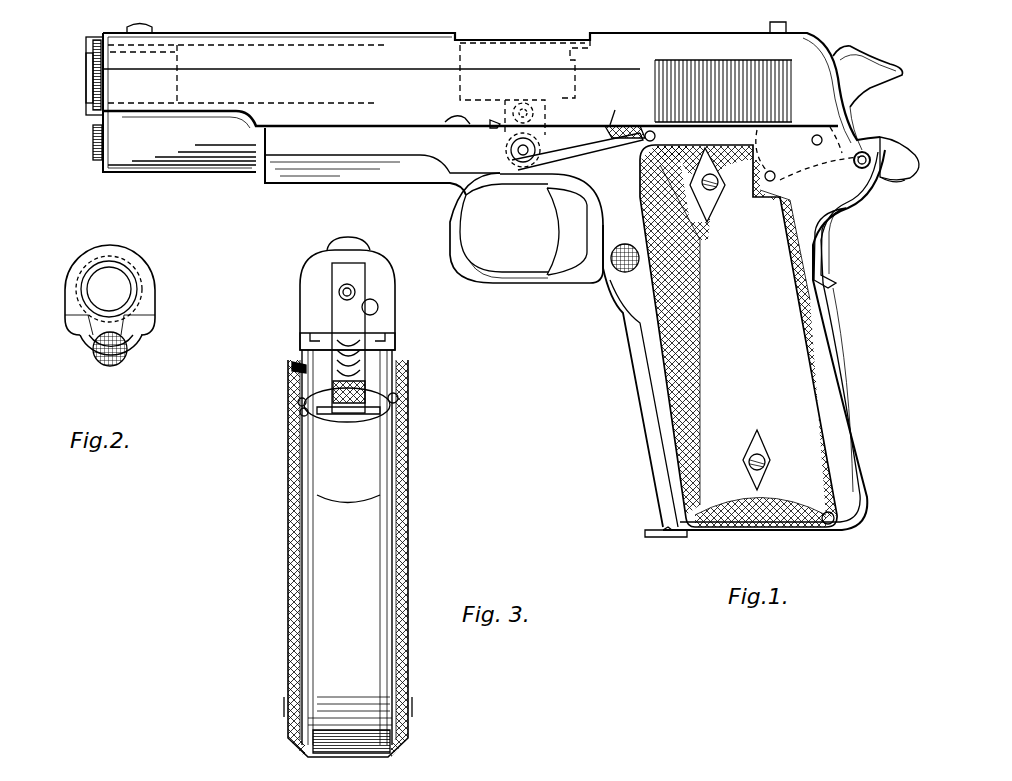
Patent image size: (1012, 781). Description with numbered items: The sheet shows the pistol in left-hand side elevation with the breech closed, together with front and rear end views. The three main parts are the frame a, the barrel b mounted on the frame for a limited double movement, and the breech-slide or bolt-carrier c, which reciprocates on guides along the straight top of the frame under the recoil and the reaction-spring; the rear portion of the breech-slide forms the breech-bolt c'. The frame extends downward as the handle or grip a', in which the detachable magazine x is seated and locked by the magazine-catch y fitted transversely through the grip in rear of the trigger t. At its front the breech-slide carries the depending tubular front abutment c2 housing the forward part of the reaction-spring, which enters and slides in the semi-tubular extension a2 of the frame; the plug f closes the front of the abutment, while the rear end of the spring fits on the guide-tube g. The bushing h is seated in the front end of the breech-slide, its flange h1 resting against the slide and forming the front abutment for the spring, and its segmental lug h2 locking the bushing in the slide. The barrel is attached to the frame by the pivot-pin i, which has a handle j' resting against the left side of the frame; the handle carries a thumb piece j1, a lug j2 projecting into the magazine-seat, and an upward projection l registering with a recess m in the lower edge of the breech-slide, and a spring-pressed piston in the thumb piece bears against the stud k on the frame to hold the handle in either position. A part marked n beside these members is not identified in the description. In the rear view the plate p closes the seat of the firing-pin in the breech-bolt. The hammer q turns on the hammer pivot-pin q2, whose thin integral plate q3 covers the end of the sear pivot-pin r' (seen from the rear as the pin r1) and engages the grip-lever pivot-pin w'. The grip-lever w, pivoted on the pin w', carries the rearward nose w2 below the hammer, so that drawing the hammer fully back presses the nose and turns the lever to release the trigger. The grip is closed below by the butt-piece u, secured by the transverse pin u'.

In FIG. 1, the frame a is at (575, 329).
In FIG. 1, the handle or grip a' is at (738, 336).
In FIG. 1, the semi-tubular extension of the frame a2 is at (313, 140).
In FIG. 1, the barrel b is at (505, 38).
In FIG. 2, the barrel b is at (109, 289).
In FIG. 1, the breech-slide or bolt-carrier c is at (491, 89).
In FIG. 2, the breech-slide or bolt-carrier c is at (117, 295).
In FIG. 1, the breech-bolt c' is at (603, 70).
In FIG. 3, the breech-bolt c' is at (347, 293).
In FIG. 1, the front abutment c2 is at (182, 144).
In FIG. 2, the front abutment c2 is at (122, 362).
In FIG. 1, the plug f is at (95, 158).
In FIG. 2, the plug f is at (96, 362).
In FIG. 3, the guide-tube g is at (348, 337).
In FIG. 1, the bushing h is at (90, 75).
In FIG. 2, the flange of the bushing h1 is at (126, 310).
In FIG. 2, the segmental lug of the bushing h2 is at (90, 308).
In FIG. 1, the pivot-pin i is at (508, 150).
In FIG. 1, the handle of the pivot-pin j' is at (577, 151).
In FIG. 1, the thumb piece j1 is at (630, 140).
In FIG. 3, the thumb piece j1 is at (292, 368).
In FIG. 1, the lug of the handle j2 is at (605, 150).
In FIG. 1, the stud k is at (655, 136).
In FIG. 3, the stud k is at (299, 400).
In FIG. 1, the upward projection of the handle l is at (611, 108).
In FIG. 1, the recess in the breech-slide m is at (445, 120).
In FIG. 1, the locking lug n is at (492, 120).
In FIG. 3, the plate p is at (348, 341).
In FIG. 1, the hammer q is at (868, 98).
In FIG. 3, the hammer q is at (350, 393).
In FIG. 1, the hammer pivot-pin q2 is at (823, 137).
In FIG. 1, the plate of the hammer pivot-pin q3 is at (870, 155).
In FIG. 3, the plate of the hammer pivot-pin q3 is at (390, 368).
In FIG. 1, the pivot-pin of the sear and safety r' is at (808, 154).
In FIG. 3, the pivot-pin of the sear and safety r1 is at (302, 414).
In FIG. 1, the trigger t is at (526, 228).
In FIG. 1, the butt-piece u is at (868, 384).
In FIG. 3, the butt-piece u is at (348, 553).
In FIG. 1, the pin securing the butt-piece u' is at (867, 522).
In FIG. 3, the pin securing the butt-piece u' is at (392, 726).
In FIG. 1, the grip-lever w is at (849, 248).
In FIG. 3, the grip-lever w is at (348, 479).
In FIG. 1, the grip-lever pivot-pin w' is at (917, 196).
In FIG. 3, the grip-lever pivot-pin w' is at (423, 402).
In FIG. 1, the nose of the grip-lever w2 is at (915, 150).
In FIG. 3, the nose of the grip-lever w2 is at (360, 410).
In FIG. 1, the magazine x is at (666, 542).
In FIG. 3, the magazine x is at (378, 305).
In FIG. 1, the magazine-catch y is at (617, 272).